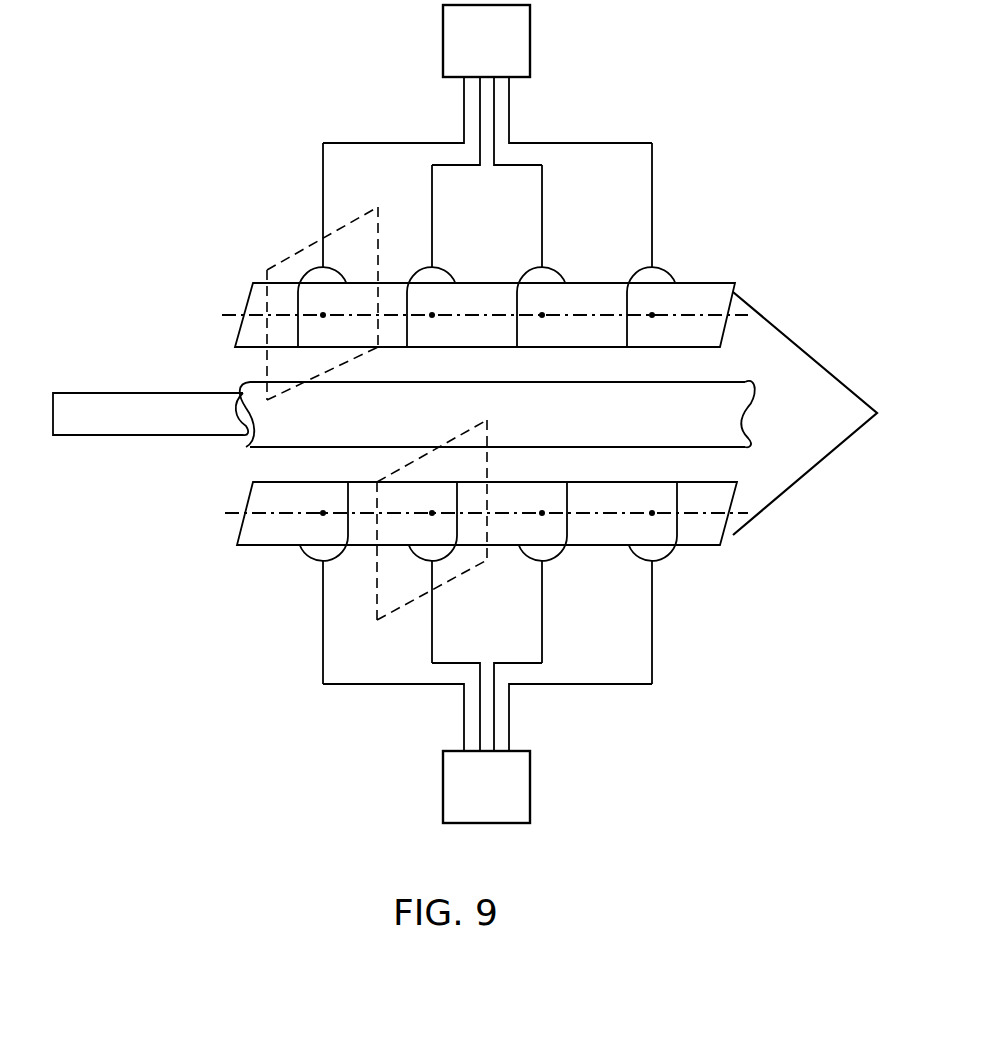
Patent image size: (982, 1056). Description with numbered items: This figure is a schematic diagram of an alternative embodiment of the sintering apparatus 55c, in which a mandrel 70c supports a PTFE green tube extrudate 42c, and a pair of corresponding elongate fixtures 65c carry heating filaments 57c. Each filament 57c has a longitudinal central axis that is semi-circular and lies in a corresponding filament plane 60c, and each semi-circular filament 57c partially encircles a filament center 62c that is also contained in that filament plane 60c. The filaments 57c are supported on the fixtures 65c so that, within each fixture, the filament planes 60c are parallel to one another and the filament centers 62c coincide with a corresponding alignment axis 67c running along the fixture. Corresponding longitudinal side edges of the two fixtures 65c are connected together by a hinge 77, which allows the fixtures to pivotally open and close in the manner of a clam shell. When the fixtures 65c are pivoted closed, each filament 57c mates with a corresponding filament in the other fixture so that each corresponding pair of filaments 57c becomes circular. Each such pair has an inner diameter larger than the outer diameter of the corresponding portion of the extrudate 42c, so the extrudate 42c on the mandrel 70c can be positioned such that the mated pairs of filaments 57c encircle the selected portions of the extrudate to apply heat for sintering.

The PTFE green tube extrudate 42c is at (715, 425).
The apparatus 55c is at (647, 98).
The filaments 57c is at (323, 262).
The filament plane 60c is at (306, 246).
The filament center 62c is at (323, 315).
The elongate fixtures 65c is at (729, 283).
The alignment axis 67c is at (229, 313).
The mandrel 70c is at (112, 393).
The hinge 77 is at (800, 345).